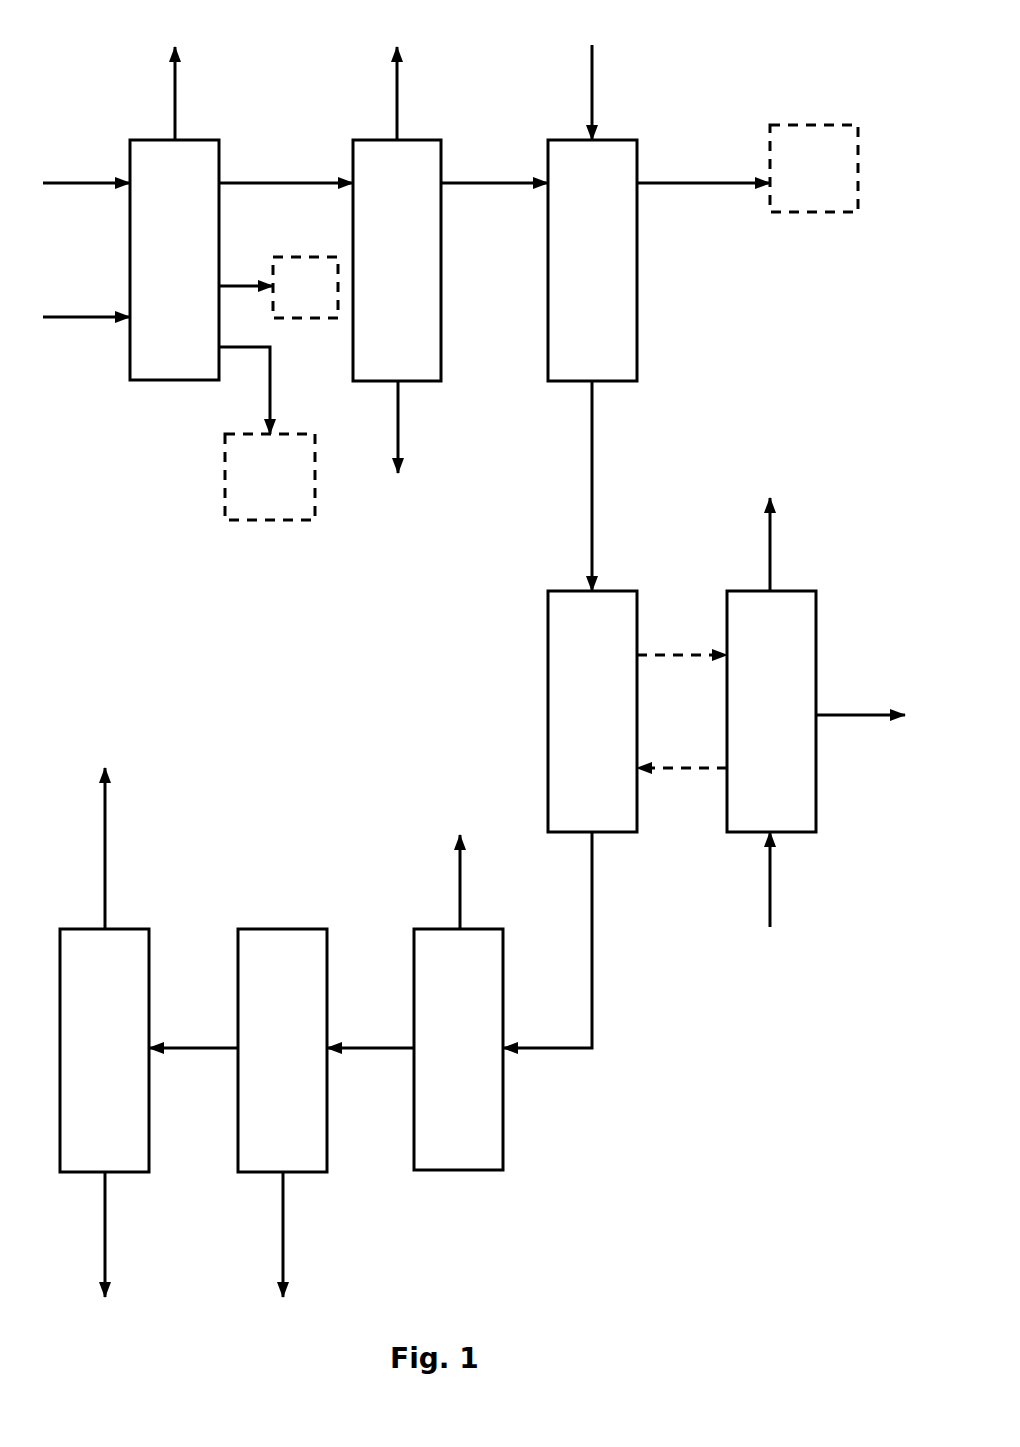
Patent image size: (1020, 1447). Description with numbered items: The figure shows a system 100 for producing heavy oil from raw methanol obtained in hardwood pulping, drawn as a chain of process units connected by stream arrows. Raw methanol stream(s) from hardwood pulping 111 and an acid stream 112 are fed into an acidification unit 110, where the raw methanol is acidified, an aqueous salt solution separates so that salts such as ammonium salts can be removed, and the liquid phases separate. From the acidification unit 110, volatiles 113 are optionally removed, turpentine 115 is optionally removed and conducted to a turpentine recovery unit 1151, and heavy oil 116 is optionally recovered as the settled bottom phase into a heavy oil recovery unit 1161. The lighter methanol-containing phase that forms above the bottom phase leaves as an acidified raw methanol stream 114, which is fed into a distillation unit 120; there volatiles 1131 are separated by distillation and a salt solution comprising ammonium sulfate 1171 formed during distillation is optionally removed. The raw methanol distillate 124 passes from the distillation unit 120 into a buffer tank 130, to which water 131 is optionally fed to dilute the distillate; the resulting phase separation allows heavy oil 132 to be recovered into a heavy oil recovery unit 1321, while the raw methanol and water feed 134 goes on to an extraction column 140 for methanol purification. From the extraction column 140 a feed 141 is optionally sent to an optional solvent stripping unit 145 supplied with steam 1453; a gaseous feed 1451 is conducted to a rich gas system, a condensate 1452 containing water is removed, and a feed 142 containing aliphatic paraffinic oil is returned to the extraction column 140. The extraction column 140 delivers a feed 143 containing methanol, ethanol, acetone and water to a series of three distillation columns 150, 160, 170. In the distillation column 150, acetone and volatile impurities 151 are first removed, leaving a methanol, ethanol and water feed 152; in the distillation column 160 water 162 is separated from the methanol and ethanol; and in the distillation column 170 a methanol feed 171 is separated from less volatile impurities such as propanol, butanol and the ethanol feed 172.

The system 100 is at (268, 675).
The acidification unit 110 is at (133, 207).
The raw methanol stream from hardwood pulping 111 is at (86, 221).
The acid stream 112 is at (86, 358).
The volatiles 113 is at (211, 71).
The acidified raw methanol stream 114 is at (286, 145).
The turpentine 115 is at (251, 251).
The turpentine recovery unit 1151 is at (321, 265).
The heavy oil 116 is at (277, 390).
The heavy oil recovery unit 1161 is at (235, 490).
The distillation unit 120 is at (435, 260).
The volatiles 1131 is at (441, 71).
The raw methanol distillate 124 is at (494, 147).
The salt solution comprising ammonium sulfate 1171 is at (365, 428).
The buffer tank 130 is at (630, 260).
The water 131 is at (629, 70).
The heavy oil 132 is at (703, 147).
The heavy oil recovery unit 1321 is at (782, 106).
The raw methanol and water feed 134 is at (622, 486).
The extraction column 140 is at (552, 711).
The feed 141 is at (682, 619).
The feed containing aliphatic paraffinic oil 142 is at (682, 731).
The feed containing methanol, ethanol, acetone and water 143 is at (578, 940).
The solvent stripping unit 145 is at (821, 683).
The gaseous feed 1451 is at (810, 539).
The condensate 1452 is at (866, 681).
The steam 1453 is at (814, 884).
The distillation column 150 is at (419, 1001).
The acetone and volatile impurities 151 is at (490, 879).
The methanol, ethanol and water feed 152 is at (370, 1012).
The distillation column 160 is at (242, 1002).
The water 162 is at (245, 1137).
The distillation column 170 is at (82, 988).
The methanol feed 171 is at (135, 848).
The ethanol feed 172 is at (135, 1234).